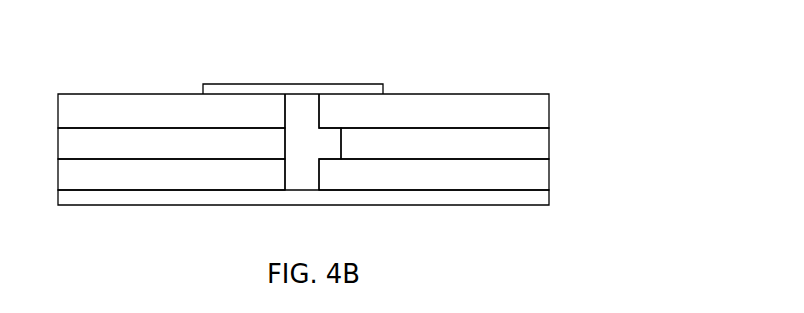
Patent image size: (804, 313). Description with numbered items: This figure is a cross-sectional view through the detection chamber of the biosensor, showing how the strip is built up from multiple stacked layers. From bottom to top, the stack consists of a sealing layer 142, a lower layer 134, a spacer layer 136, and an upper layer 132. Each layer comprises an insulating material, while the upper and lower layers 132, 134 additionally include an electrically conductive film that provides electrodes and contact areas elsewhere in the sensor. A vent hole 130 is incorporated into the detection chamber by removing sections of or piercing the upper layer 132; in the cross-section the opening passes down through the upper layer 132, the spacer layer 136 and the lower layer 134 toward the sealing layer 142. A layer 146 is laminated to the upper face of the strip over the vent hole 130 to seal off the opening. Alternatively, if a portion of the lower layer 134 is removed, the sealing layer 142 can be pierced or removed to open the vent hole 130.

The vent hole 130 is at (300, 122).
The upper layer 132 is at (535, 110).
The lower layer 134 is at (535, 173).
The spacer layer 136 is at (535, 147).
The sealing layer 142 is at (532, 200).
The layer 146 is at (357, 83).